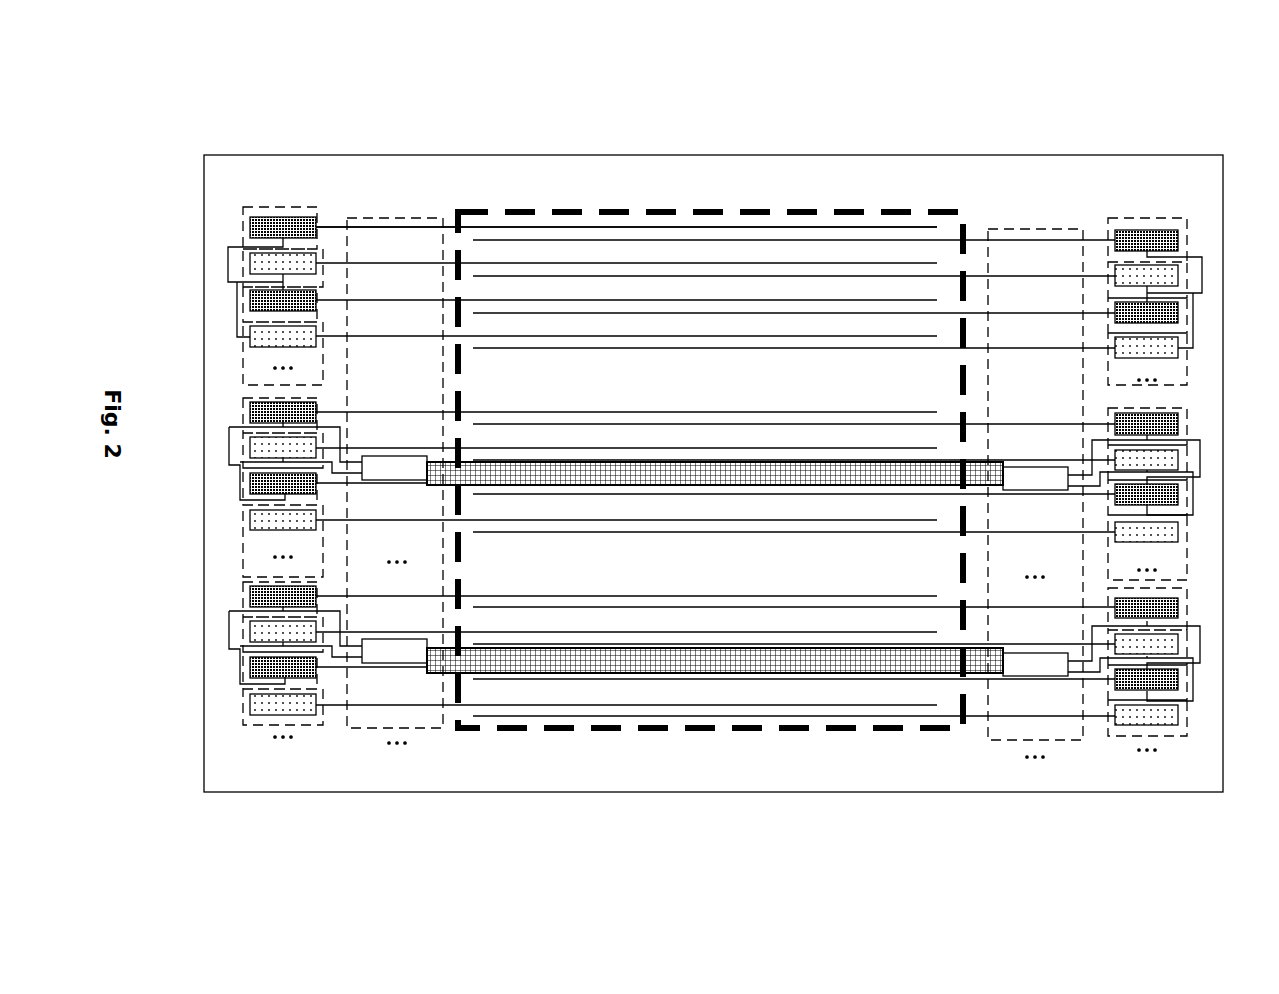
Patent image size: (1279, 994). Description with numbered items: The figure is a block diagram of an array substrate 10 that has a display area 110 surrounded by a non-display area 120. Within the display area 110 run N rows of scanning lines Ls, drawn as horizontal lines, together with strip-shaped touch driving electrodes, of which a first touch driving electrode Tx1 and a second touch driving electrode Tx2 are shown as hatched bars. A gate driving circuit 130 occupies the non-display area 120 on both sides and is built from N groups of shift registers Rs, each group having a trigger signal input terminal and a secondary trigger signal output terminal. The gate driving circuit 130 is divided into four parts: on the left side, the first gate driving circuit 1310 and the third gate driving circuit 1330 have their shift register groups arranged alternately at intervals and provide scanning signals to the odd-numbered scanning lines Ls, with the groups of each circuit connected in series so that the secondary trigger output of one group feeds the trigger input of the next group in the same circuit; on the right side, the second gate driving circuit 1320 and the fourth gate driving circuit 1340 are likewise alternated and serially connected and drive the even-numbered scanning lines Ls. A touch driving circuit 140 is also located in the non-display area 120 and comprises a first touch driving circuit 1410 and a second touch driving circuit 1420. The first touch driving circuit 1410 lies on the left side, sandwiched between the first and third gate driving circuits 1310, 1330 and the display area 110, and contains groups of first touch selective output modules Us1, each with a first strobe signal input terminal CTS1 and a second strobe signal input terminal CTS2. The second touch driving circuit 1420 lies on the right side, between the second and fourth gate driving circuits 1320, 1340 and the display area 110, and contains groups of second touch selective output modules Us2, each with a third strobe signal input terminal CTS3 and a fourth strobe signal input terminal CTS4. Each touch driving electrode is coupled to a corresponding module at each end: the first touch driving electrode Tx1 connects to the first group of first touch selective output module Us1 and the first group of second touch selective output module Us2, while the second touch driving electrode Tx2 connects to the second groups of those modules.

The array substrate 10 is at (172, 107).
The display area 110 is at (737, 223).
The non-display area 120 is at (910, 187).
The gate driving circuit 130 is at (701, 407).
The touch driving circuit 140 is at (705, 411).
The first gate driving circuit 1310 is at (327, 220).
The second gate driving circuit 1320 is at (1113, 235).
The third gate driving circuit 1330 is at (243, 267).
The fourth gate driving circuit 1340 is at (1190, 283).
The first touch driving circuit 1410 is at (406, 381).
The second touch driving circuit 1420 is at (1013, 235).
The shift register Rs is at (267, 227).
The scanning line Ls is at (497, 228).
The first touch driving electrode Tx1 is at (633, 475).
The second touch driving electrode Tx2 is at (663, 665).
The first touch selective output module Us1 is at (412, 467).
The second touch selective output module Us2 is at (1022, 475).
The first strobe signal input terminal CTS1 is at (355, 462).
The second strobe signal input terminal CTS2 is at (355, 477).
The third strobe signal input terminal CTS3 is at (1072, 470).
The fourth strobe signal input terminal CTS4 is at (1072, 485).